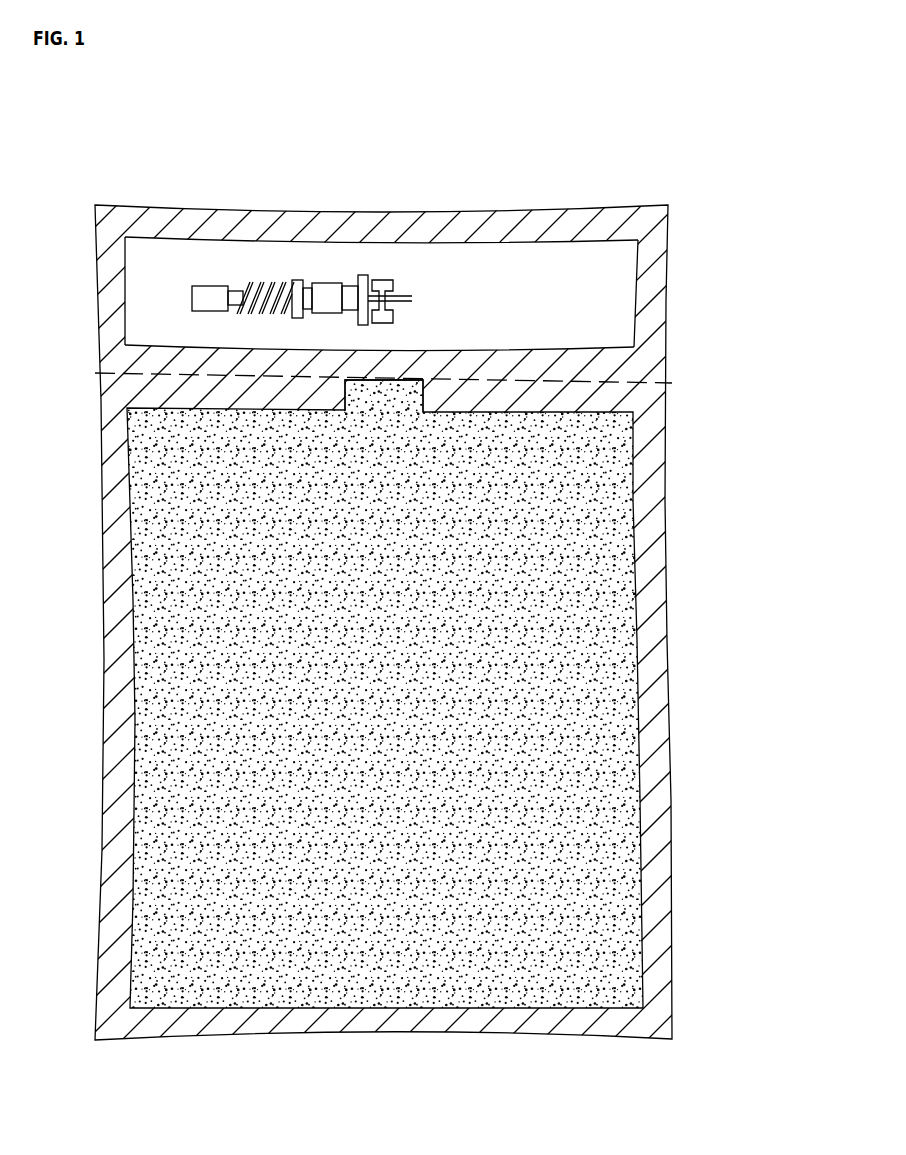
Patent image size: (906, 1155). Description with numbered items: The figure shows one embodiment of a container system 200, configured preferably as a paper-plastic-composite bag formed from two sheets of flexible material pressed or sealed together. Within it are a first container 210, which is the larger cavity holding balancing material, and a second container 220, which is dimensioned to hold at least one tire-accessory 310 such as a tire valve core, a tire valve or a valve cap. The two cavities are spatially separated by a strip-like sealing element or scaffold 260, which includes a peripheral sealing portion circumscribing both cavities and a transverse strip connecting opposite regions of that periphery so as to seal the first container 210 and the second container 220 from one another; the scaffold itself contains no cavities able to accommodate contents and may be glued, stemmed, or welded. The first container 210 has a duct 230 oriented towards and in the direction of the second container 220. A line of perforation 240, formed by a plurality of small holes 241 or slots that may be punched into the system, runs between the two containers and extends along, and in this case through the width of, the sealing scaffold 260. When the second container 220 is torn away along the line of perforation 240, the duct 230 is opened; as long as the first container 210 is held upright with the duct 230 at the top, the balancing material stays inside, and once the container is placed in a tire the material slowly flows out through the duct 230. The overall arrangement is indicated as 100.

The battery cell 100 is at (584, 545).
The container system 200 is at (614, 158).
The first container 210 is at (588, 477).
The second container 220 is at (590, 293).
The duct 230 is at (401, 404).
The line of perforation 240 is at (637, 372).
The holes 241 is at (510, 383).
The sealing element 260 is at (387, 230).
The tire-accessory 310 is at (393, 283).